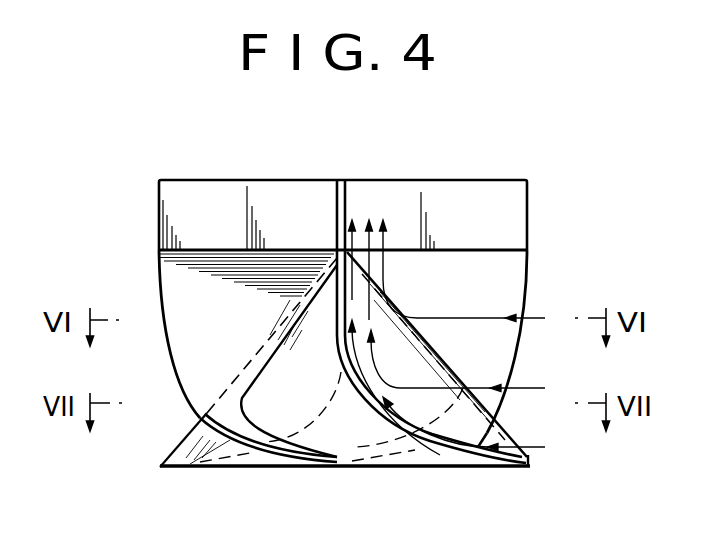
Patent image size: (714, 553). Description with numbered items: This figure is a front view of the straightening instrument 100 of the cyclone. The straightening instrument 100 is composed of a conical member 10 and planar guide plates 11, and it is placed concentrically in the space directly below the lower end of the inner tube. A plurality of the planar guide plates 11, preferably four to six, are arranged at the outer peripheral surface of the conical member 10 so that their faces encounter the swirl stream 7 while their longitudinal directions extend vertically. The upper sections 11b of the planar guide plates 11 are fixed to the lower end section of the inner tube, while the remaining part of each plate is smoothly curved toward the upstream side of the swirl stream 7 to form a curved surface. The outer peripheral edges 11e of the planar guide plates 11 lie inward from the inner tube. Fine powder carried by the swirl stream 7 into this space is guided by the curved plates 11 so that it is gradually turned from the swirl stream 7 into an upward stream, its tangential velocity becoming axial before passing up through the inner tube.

The straightening instrument 100 is at (546, 210).
The planar guide plates 11 is at (159, 289).
The upper sections of the planar guide plates 11b is at (226, 200).
The outer peripheral edges of the planar guide plates 11e is at (173, 376).
The conical member 10 is at (176, 452).
The swirl stream 7 is at (525, 455).